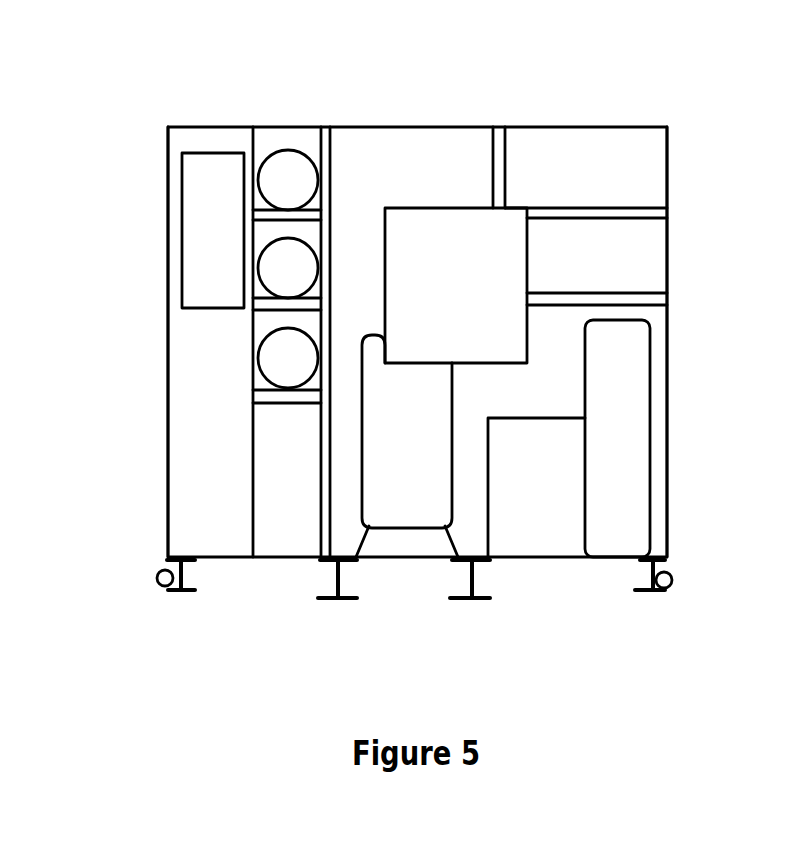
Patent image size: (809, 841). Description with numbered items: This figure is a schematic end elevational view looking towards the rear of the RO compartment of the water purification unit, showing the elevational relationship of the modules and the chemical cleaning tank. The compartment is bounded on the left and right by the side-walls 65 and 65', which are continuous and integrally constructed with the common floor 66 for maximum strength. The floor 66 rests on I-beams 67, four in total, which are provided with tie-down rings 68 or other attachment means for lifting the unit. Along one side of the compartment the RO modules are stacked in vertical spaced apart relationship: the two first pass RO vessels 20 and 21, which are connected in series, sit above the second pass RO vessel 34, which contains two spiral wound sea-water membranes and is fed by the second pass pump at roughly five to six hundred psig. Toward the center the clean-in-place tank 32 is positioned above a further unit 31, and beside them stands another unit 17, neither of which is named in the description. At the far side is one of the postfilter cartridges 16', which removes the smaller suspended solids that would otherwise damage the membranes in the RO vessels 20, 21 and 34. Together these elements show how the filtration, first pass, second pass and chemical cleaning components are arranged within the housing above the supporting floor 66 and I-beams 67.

The postfilter cartridge 16' is at (676, 430).
The compartment box 17 is at (516, 497).
The RO vessel 20 is at (298, 155).
The RO vessel 21 is at (266, 242).
The unit housing 31 is at (391, 482).
The clean-in-place tank 32 is at (436, 284).
The second pass RO vessel 34 is at (268, 333).
The side-wall 65 is at (145, 342).
The side-wall 65' is at (721, 342).
The floor 66 is at (286, 557).
The I-beam 67 is at (180, 592).
The tie-down ring 68 is at (158, 572).